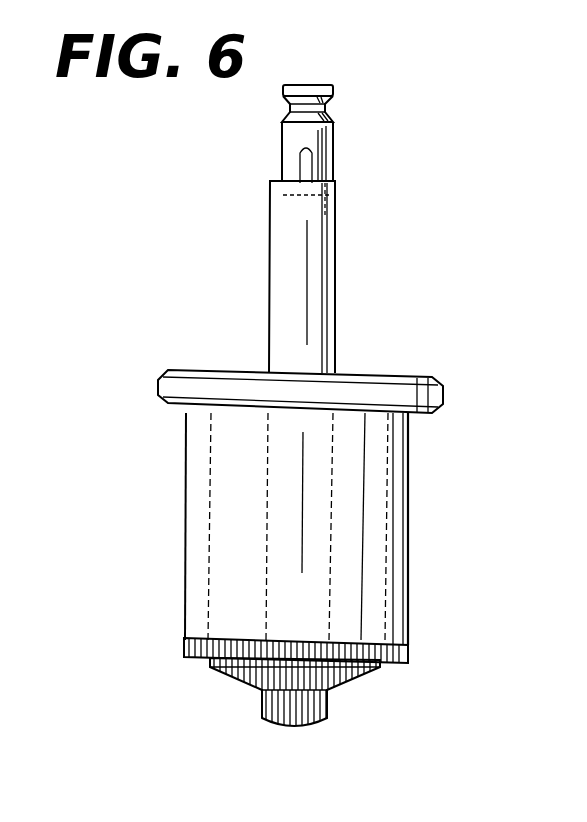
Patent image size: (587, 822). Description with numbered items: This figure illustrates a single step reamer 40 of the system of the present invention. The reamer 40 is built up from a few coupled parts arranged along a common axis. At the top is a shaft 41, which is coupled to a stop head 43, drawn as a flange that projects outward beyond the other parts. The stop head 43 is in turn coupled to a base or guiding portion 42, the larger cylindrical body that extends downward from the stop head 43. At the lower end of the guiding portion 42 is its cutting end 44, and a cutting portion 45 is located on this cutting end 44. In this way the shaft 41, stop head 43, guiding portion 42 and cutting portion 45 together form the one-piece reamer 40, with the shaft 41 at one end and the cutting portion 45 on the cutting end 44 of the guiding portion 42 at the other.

The reamer 40 is at (158, 585).
The shaft 41 is at (336, 287).
The guiding portion 42 is at (409, 558).
The stop head 43 is at (378, 373).
The cutting end 44 is at (408, 655).
The cutting portion 45 is at (350, 680).